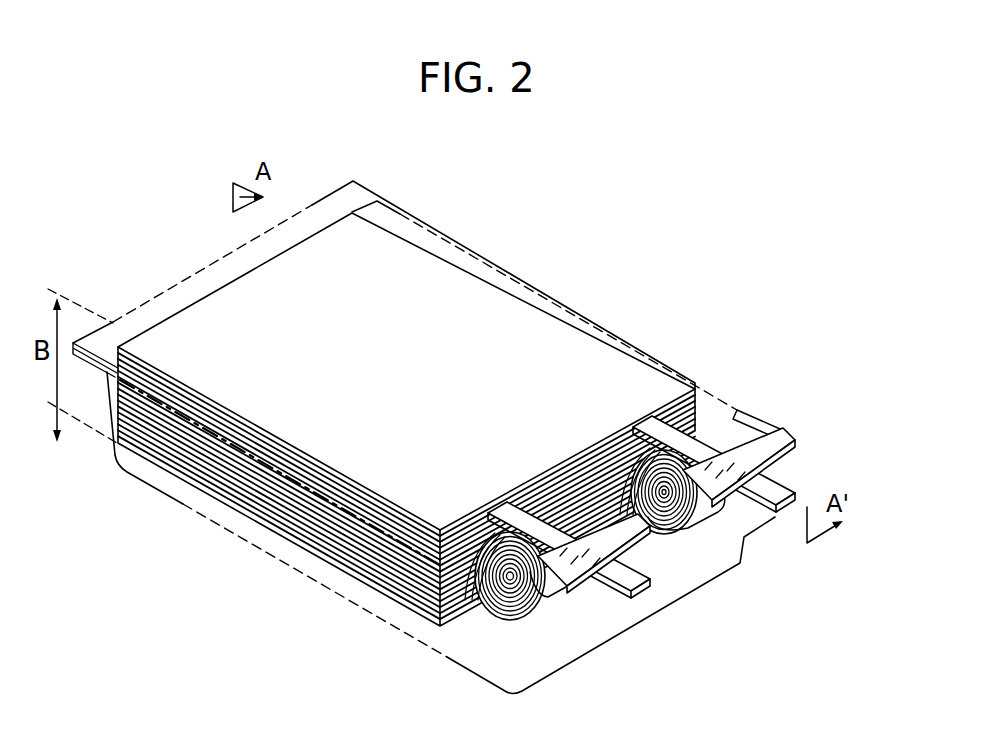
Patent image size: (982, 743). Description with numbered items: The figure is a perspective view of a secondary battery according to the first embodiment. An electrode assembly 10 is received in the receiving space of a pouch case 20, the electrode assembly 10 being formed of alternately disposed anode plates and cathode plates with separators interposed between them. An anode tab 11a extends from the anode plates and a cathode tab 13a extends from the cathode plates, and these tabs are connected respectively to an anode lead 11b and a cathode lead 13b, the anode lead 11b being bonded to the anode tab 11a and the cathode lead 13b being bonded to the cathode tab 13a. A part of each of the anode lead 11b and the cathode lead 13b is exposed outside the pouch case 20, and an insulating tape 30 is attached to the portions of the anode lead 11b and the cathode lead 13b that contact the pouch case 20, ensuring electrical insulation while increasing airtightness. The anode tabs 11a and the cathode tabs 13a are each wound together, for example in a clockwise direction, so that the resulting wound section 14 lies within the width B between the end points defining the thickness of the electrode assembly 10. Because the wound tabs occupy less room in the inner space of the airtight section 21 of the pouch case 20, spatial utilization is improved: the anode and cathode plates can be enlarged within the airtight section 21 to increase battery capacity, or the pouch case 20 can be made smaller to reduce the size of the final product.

The electrode assembly 10 is at (492, 357).
The anode tab 11a is at (710, 514).
The anode lead 11b is at (772, 512).
The cathode tab 13a is at (549, 598).
The cathode lead 13b is at (630, 585).
The wound section 14 is at (670, 530).
The pouch case 20 is at (222, 256).
The airtight section 21 is at (752, 425).
The insulating tape 30 is at (787, 432).